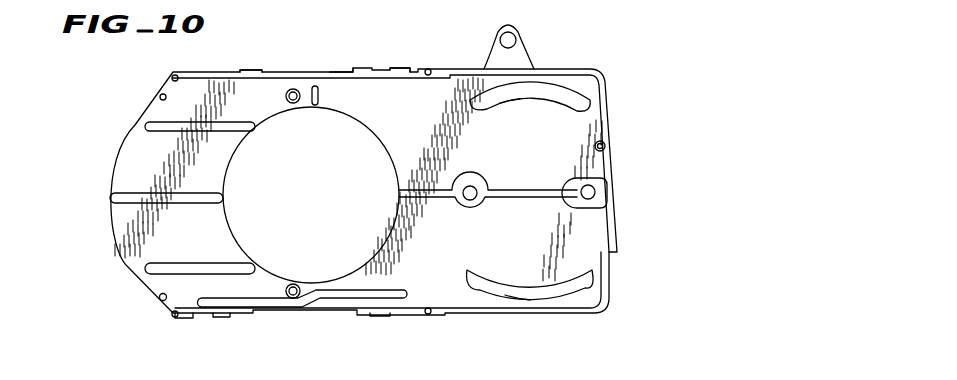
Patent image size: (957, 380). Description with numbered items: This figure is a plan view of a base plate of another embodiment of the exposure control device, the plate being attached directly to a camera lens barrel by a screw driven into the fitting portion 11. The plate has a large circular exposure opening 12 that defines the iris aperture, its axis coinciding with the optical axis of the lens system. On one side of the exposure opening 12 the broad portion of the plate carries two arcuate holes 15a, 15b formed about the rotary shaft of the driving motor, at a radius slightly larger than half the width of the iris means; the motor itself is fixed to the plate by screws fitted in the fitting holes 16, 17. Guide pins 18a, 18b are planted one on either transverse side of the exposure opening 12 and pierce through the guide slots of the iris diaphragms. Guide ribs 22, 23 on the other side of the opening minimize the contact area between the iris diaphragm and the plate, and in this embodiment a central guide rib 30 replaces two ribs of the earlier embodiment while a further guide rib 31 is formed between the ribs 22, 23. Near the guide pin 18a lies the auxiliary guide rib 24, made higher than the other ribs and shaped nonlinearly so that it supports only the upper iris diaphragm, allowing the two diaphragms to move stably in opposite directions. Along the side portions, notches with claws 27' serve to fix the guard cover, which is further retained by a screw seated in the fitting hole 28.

The fitting portion 11 is at (518, 32).
The exposure opening 12 is at (345, 267).
The arcuate hole 15a is at (592, 288).
The arcuate hole 15b is at (545, 83).
The fitting hole 16 is at (468, 200).
The fitting hole 17 is at (607, 192).
The guide pin 18a is at (293, 300).
The guide pin 18b is at (295, 88).
The guide rib 22 is at (150, 267).
The guide rib 23 is at (145, 127).
The auxiliary guide rib 24 is at (303, 331).
The claw 27' is at (231, 343).
The fitting hole 28 is at (606, 146).
The central guide rib 30 is at (545, 193).
The guide rib 31 is at (112, 195).